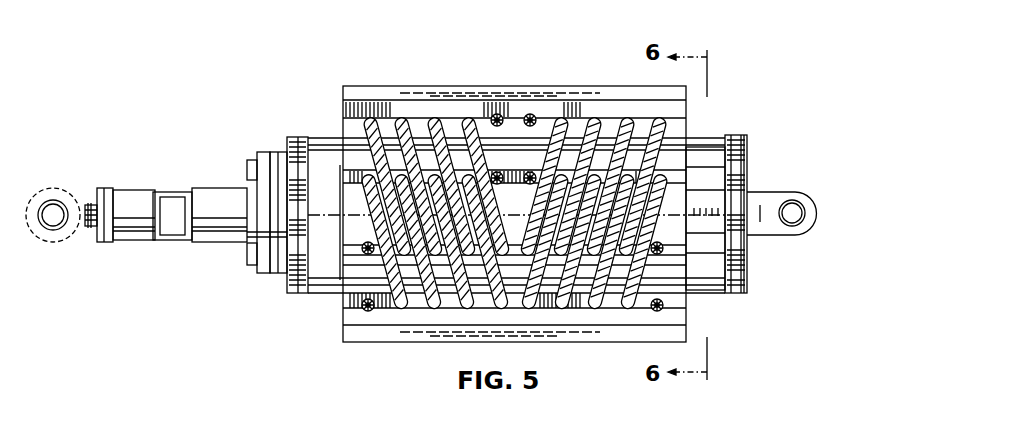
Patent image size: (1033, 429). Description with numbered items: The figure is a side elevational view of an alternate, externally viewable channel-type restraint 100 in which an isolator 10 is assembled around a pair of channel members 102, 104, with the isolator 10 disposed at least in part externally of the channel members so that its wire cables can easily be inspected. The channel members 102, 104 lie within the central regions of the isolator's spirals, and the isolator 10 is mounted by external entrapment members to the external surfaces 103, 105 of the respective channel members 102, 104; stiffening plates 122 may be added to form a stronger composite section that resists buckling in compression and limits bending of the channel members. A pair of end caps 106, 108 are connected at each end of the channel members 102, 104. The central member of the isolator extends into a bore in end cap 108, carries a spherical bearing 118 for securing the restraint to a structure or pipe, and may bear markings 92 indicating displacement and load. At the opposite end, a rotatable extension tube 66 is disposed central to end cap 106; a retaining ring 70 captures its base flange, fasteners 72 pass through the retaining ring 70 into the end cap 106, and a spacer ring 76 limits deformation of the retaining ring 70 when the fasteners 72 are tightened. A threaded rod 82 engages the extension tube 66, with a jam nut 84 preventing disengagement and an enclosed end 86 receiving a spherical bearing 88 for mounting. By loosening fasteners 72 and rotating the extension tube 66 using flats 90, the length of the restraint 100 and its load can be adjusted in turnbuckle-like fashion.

The channel type restraint 100 is at (232, 86).
The isolator 10 is at (465, 108).
The stiffening plate 122 is at (393, 92).
The external surface 103 is at (333, 135).
The external surface 105 is at (335, 285).
The end cap 106 is at (290, 140).
The channel member 102 is at (711, 146).
The end cap 108 is at (741, 152).
The channel member 104 is at (710, 293).
The markings 92 is at (752, 222).
The spherical bearing 118 is at (788, 197).
The spherical bearing 88 is at (60, 192).
The enclosed end 86 is at (68, 200).
The threaded rod 82 is at (88, 229).
The jam nut 84 is at (102, 243).
The flats 90 is at (175, 192).
The extension tube 66 is at (238, 188).
The fasteners 72 is at (252, 258).
The retaining ring 70 is at (263, 273).
The spacer ring 76 is at (277, 273).